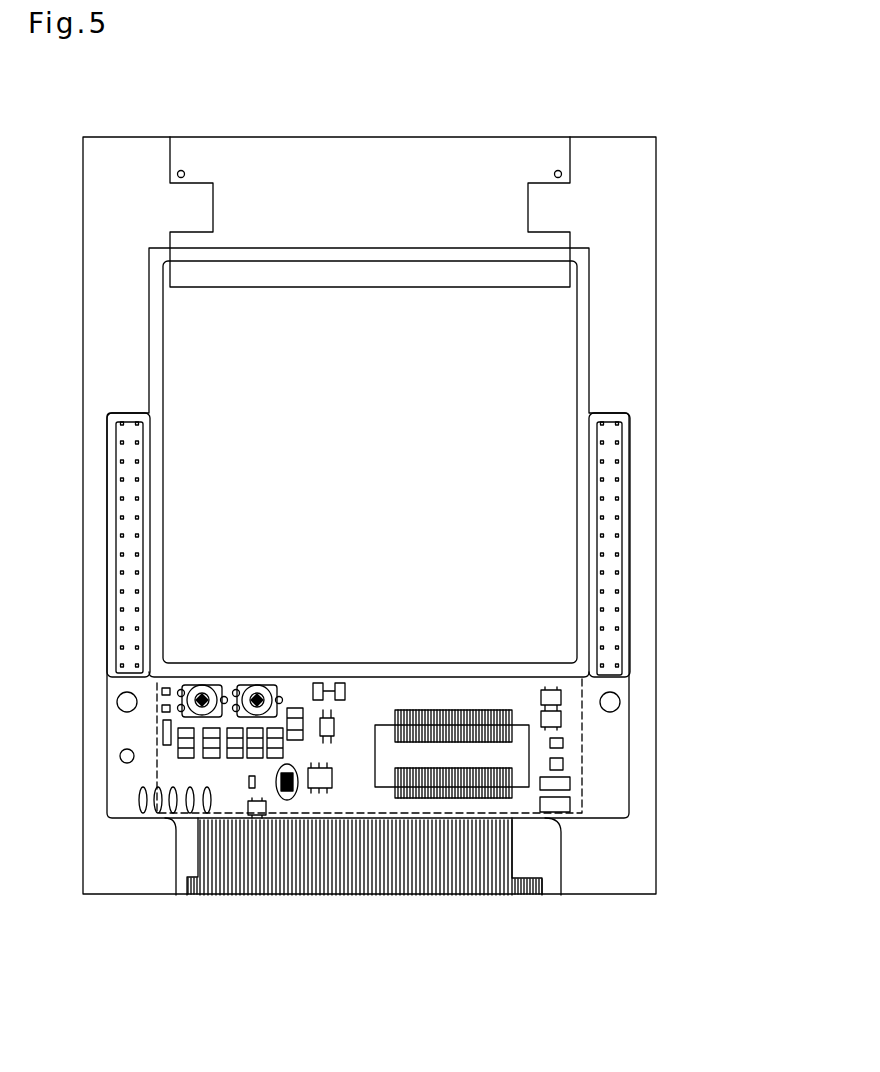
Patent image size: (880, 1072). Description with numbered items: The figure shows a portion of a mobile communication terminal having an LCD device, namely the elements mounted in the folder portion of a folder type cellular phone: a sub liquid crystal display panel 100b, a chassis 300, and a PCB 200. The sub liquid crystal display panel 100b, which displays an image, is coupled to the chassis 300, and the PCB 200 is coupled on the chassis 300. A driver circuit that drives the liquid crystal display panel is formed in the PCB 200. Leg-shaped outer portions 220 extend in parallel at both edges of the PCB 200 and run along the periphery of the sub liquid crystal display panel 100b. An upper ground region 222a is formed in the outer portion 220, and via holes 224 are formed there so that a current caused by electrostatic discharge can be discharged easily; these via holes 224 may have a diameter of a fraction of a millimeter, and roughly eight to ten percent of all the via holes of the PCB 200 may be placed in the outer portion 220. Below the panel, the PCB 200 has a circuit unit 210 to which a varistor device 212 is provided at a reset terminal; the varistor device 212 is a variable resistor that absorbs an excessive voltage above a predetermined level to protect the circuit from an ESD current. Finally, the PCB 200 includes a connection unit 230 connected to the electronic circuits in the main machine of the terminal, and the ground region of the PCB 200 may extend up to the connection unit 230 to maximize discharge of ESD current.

The chassis 300 is at (635, 237).
The PCB 200 is at (446, 628).
The outer portion 220 is at (645, 615).
The upper ground region 222a is at (620, 468).
The via hole 224 is at (620, 517).
The sub liquid crystal display panel 100b is at (525, 370).
The circuit unit 210 is at (582, 728).
The connection unit 230 is at (216, 895).
The varistor device 212 is at (291, 830).